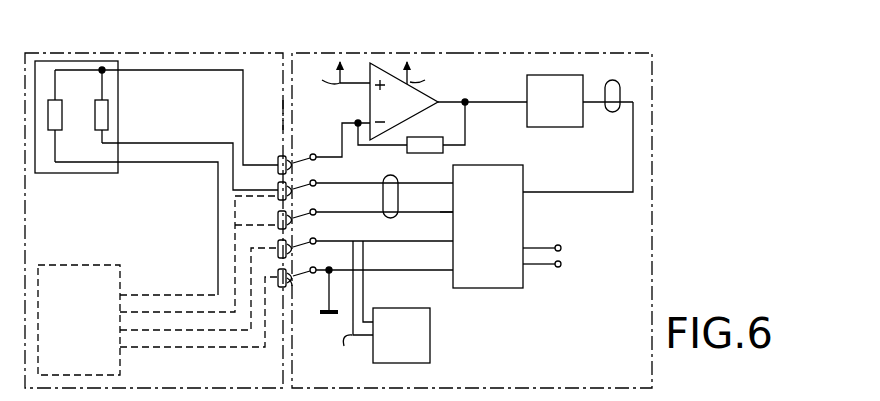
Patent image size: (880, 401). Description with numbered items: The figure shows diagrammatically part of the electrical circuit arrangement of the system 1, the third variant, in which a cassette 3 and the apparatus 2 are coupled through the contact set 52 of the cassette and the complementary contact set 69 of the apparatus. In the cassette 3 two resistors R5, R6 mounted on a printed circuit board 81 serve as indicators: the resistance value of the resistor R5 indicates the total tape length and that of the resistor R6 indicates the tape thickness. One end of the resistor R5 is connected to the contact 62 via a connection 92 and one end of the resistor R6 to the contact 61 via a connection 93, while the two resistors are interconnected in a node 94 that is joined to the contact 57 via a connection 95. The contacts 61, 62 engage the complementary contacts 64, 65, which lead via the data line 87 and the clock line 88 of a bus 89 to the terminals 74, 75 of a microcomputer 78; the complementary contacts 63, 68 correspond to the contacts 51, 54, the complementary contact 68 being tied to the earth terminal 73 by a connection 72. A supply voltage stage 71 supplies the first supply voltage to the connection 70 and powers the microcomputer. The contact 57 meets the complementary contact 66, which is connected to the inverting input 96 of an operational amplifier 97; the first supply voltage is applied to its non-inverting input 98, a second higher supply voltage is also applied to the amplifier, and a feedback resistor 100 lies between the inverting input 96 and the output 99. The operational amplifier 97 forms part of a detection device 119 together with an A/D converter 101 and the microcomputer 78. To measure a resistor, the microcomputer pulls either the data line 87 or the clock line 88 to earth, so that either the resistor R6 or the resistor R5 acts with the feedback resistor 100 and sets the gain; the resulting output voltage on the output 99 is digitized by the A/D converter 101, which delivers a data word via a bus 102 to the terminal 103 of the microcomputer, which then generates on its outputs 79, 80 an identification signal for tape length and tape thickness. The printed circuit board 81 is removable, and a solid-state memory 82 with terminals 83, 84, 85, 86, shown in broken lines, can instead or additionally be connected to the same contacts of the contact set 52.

The system 1 is at (287, 46).
The apparatus 2 is at (594, 46).
The cassette 3 is at (183, 47).
The contact 51 is at (278, 244).
The contact set 52 is at (277, 123).
The contact 54 is at (278, 275).
The contact 57 is at (277, 160).
The contact 61 is at (278, 189).
The contact 62 is at (278, 216).
The complementary contact 63 is at (294, 251).
The complementary contact 64 is at (294, 193).
The complementary contact 65 is at (294, 222).
The complementary contact 66 is at (294, 167).
The complementary contact 68 is at (295, 283).
The complementary contact set 69 is at (301, 150).
The connection 70 is at (356, 258).
The supply voltage stage 71 is at (430, 333).
The connection 72 is at (315, 275).
The earth terminal 73 is at (332, 308).
The terminal 74 is at (455, 186).
The terminal 75 is at (455, 213).
The microcomputer 78 is at (502, 288).
The output 79 is at (562, 247).
The output 80 is at (562, 264).
The printed circuit board 81 is at (88, 170).
The solid-state memory 82 is at (50, 275).
The terminal 83 is at (120, 330).
The terminal 84 is at (120, 312).
The terminal 85 is at (120, 295).
The terminal 86 is at (120, 350).
The data line 87 is at (413, 170).
The clock line 88 is at (404, 216).
The bus 89 is at (400, 192).
The connection 92 is at (165, 163).
The connection 93 is at (200, 143).
The node 94 is at (104, 72).
The connection 95 is at (187, 72).
The inverting input 96 is at (368, 120).
The operational amplifier 97 is at (418, 98).
The non-inverting input 98 is at (370, 80).
The output 99 is at (468, 104).
The feedback resistor 100 is at (437, 146).
The A/D converter 101 is at (543, 127).
The bus 102 is at (612, 112).
The terminal 103 is at (525, 195).
The detection device 119 is at (627, 77).
The resistor R5 is at (60, 122).
The resistor R6 is at (108, 112).